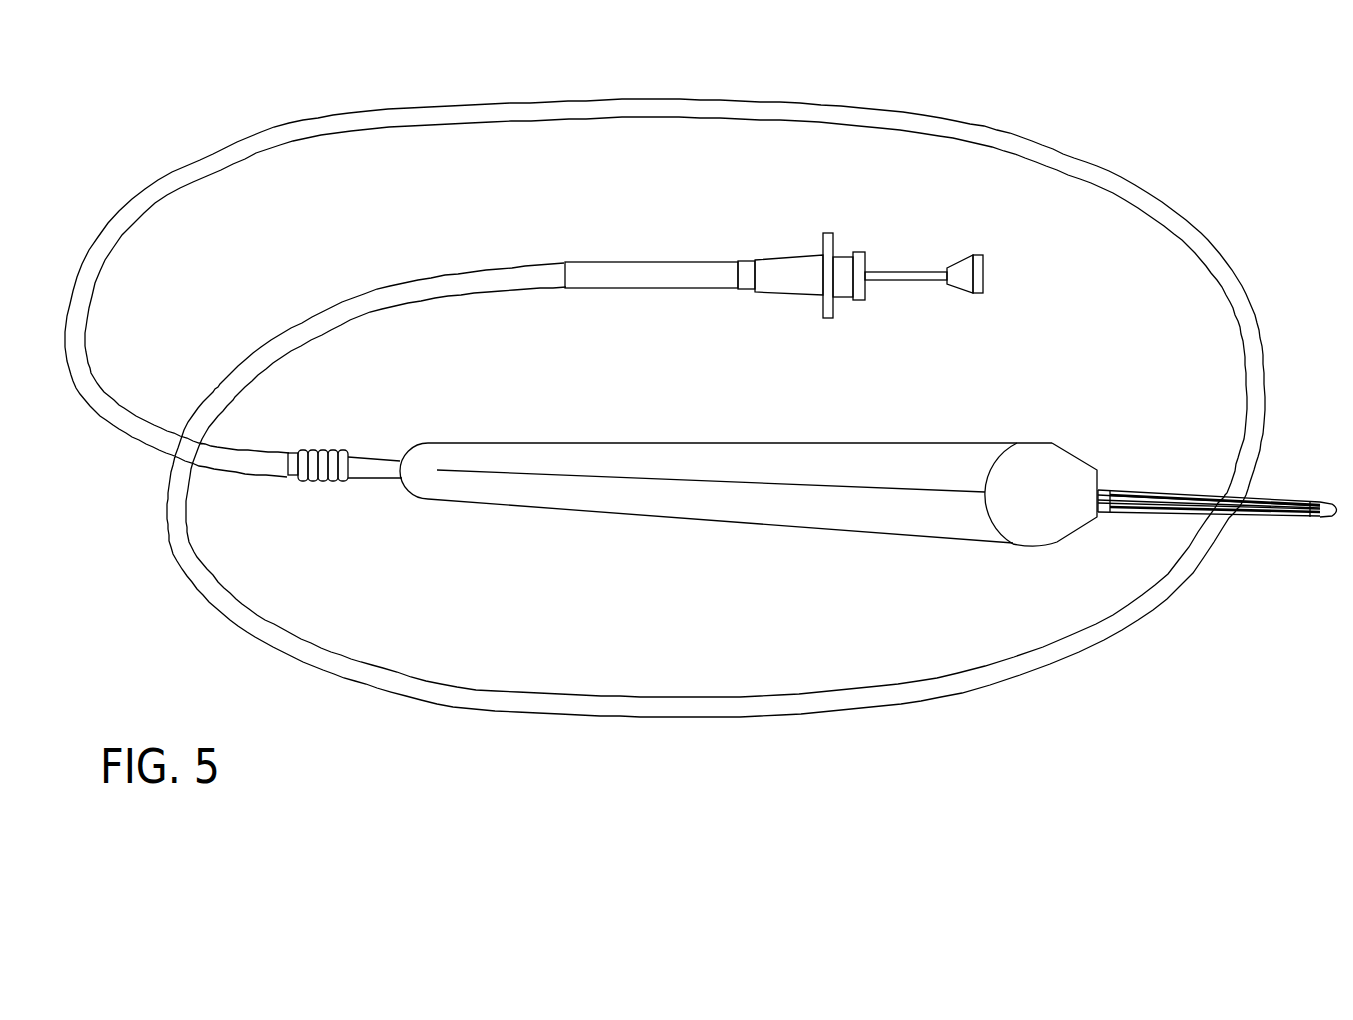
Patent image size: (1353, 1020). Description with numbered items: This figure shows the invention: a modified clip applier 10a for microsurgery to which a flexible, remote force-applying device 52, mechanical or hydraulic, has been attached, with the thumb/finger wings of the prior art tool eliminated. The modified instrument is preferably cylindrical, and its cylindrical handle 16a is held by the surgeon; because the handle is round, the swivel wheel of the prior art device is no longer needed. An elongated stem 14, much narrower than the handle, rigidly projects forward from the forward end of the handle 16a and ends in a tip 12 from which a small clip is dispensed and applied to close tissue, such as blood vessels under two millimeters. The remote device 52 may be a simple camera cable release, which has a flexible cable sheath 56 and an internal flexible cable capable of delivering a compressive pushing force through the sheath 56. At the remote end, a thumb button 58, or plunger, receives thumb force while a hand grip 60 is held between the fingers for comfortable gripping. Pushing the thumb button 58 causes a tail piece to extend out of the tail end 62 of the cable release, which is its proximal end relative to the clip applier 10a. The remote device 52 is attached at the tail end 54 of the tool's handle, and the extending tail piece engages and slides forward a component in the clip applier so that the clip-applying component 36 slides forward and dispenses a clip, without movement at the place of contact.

The clip applier 10a is at (734, 412).
The tip 12 is at (1333, 503).
The stem 14 is at (1291, 527).
The cylindrical handle 16a is at (795, 510).
The clip-applying component 36 is at (1182, 491).
The remote force-applying device 52 is at (150, 172).
The tail end of the handle 54 is at (427, 467).
The flexible cable sheath 56 is at (273, 128).
The thumb button 58 is at (963, 263).
The hand grip 60 is at (822, 255).
The tail end 62 is at (365, 463).